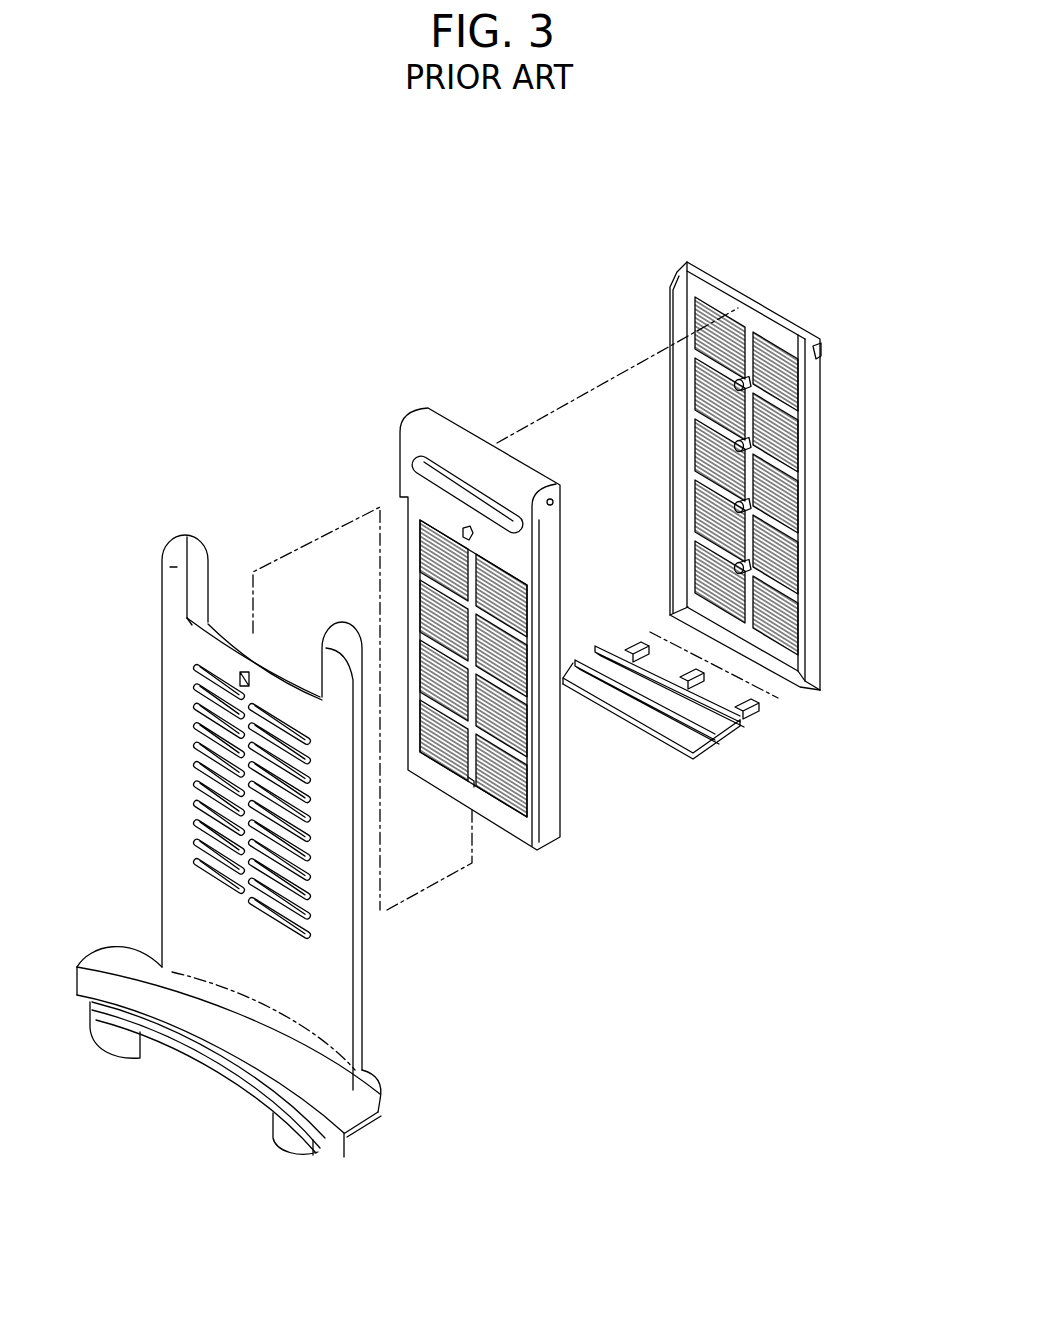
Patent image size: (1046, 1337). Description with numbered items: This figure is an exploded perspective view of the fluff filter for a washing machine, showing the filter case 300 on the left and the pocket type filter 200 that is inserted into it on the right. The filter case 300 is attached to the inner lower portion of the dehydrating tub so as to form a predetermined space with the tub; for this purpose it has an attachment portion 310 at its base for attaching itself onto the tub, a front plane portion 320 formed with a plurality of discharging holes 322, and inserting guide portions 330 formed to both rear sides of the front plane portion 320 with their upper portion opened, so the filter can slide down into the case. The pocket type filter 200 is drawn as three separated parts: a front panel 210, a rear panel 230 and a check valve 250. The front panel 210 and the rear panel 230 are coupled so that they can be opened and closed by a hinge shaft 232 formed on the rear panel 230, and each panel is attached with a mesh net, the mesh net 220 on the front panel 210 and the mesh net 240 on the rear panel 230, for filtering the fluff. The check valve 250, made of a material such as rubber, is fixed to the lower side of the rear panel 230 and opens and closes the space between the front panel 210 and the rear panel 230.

The pocket type filter 200 is at (500, 295).
The front panel 210 is at (553, 583).
The mesh net 220 is at (512, 797).
The rear panel 230 is at (795, 476).
The hinge shaft 232 is at (826, 360).
The mesh net 240 is at (787, 550).
The check valve 250 is at (670, 723).
The filter case 300 is at (291, 830).
The attachment portion 310 is at (236, 1020).
The front plane portion 320 is at (274, 830).
The discharging holes 322 is at (208, 777).
The inserting guide portions 330 is at (323, 633).